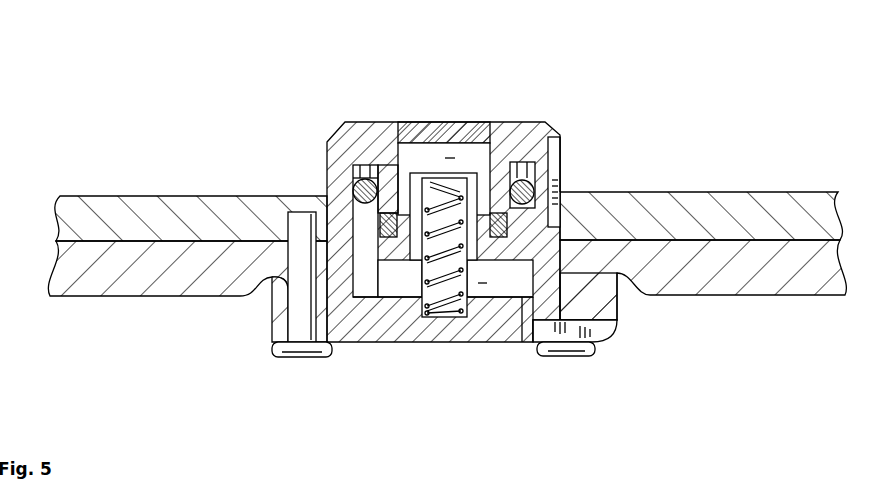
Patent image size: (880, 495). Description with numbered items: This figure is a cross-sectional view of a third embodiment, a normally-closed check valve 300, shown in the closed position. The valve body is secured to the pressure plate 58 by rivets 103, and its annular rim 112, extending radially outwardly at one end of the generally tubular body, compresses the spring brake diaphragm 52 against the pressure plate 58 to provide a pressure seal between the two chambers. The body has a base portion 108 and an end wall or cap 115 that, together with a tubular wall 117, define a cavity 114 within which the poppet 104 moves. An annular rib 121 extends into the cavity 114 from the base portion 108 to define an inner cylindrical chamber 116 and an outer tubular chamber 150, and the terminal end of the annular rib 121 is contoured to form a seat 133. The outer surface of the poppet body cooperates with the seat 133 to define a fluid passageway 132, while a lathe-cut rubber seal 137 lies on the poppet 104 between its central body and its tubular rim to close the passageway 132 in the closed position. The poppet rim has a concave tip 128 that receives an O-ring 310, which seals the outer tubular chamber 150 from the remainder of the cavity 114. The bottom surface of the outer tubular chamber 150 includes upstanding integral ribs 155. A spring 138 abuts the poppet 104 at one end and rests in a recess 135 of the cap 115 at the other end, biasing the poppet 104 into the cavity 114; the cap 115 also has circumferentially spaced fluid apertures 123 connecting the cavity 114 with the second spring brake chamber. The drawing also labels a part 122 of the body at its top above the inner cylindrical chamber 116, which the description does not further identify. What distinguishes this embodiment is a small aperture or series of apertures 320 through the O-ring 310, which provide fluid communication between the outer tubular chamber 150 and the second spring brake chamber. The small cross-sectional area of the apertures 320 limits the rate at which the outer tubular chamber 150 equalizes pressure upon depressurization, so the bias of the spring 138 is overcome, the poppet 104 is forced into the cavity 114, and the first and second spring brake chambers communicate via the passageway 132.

The check valve 300 is at (188, 78).
The pressure plate 58 is at (165, 205).
The spring brake diaphragm 52 is at (142, 300).
The annular rim 112 is at (277, 315).
The tubular wall 117 is at (290, 337).
The rivets 103 is at (297, 358).
The base portion 108 is at (530, 122).
The cap 122 is at (473, 130).
The inner cylindrical chamber 116 is at (450, 157).
The fluid passageway 132 is at (412, 175).
The annular rib 121 is at (384, 185).
The upstanding integral ribs 155 is at (369, 168).
The outer tubular chamber 150 is at (358, 186).
The apertures 320 is at (358, 190).
The O-ring 310 is at (355, 193).
The spring 138 is at (552, 172).
The concave tip 128 is at (556, 195).
The seat 133 is at (372, 265).
The seal 137 is at (388, 238).
The recess 135 is at (435, 320).
The cap 115 is at (438, 343).
The cavity 114 is at (482, 283).
The poppet 104 is at (496, 287).
The fluid apertures 123 is at (505, 327).